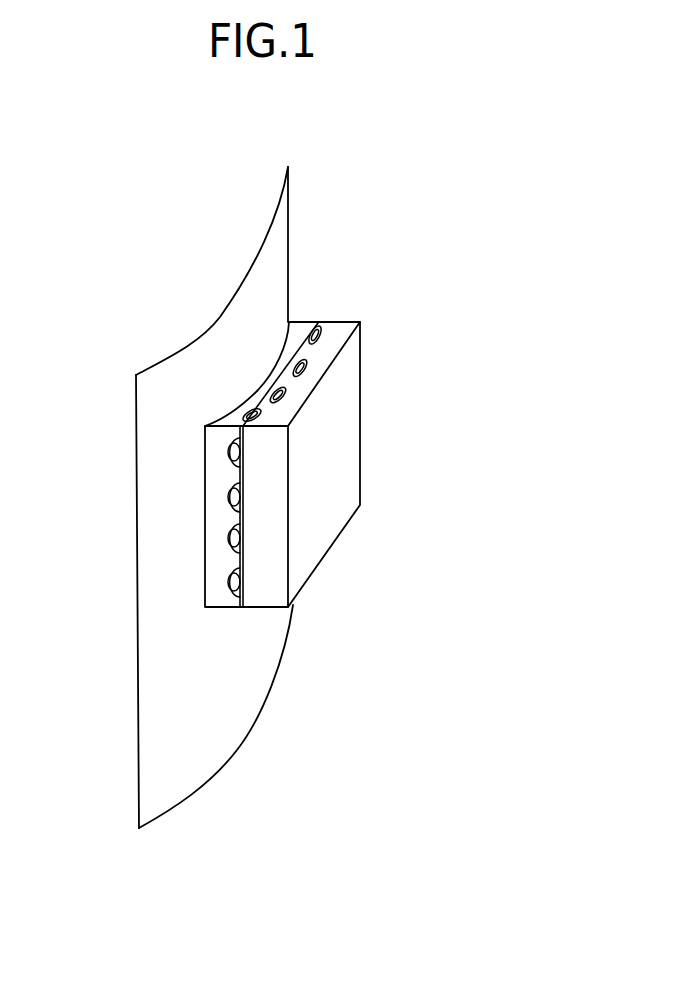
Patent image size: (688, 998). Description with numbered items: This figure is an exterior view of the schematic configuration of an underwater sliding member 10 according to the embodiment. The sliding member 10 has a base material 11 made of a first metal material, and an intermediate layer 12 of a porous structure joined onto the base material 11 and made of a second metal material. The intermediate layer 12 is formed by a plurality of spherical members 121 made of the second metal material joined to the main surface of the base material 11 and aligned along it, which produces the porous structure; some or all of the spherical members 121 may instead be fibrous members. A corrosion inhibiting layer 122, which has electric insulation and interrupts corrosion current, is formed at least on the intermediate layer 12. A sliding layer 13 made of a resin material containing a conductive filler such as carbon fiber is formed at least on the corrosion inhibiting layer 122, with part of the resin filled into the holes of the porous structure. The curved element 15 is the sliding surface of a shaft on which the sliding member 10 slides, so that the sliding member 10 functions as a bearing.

The underwater sliding member 10 is at (422, 403).
The base material 11 is at (273, 600).
The intermediate layer 12 is at (245, 612).
The spherical member 121 is at (224, 449).
The corrosion inhibiting layer 122 is at (226, 458).
The sliding layer 13 is at (215, 604).
The sliding surface of a shaft 15 is at (272, 272).